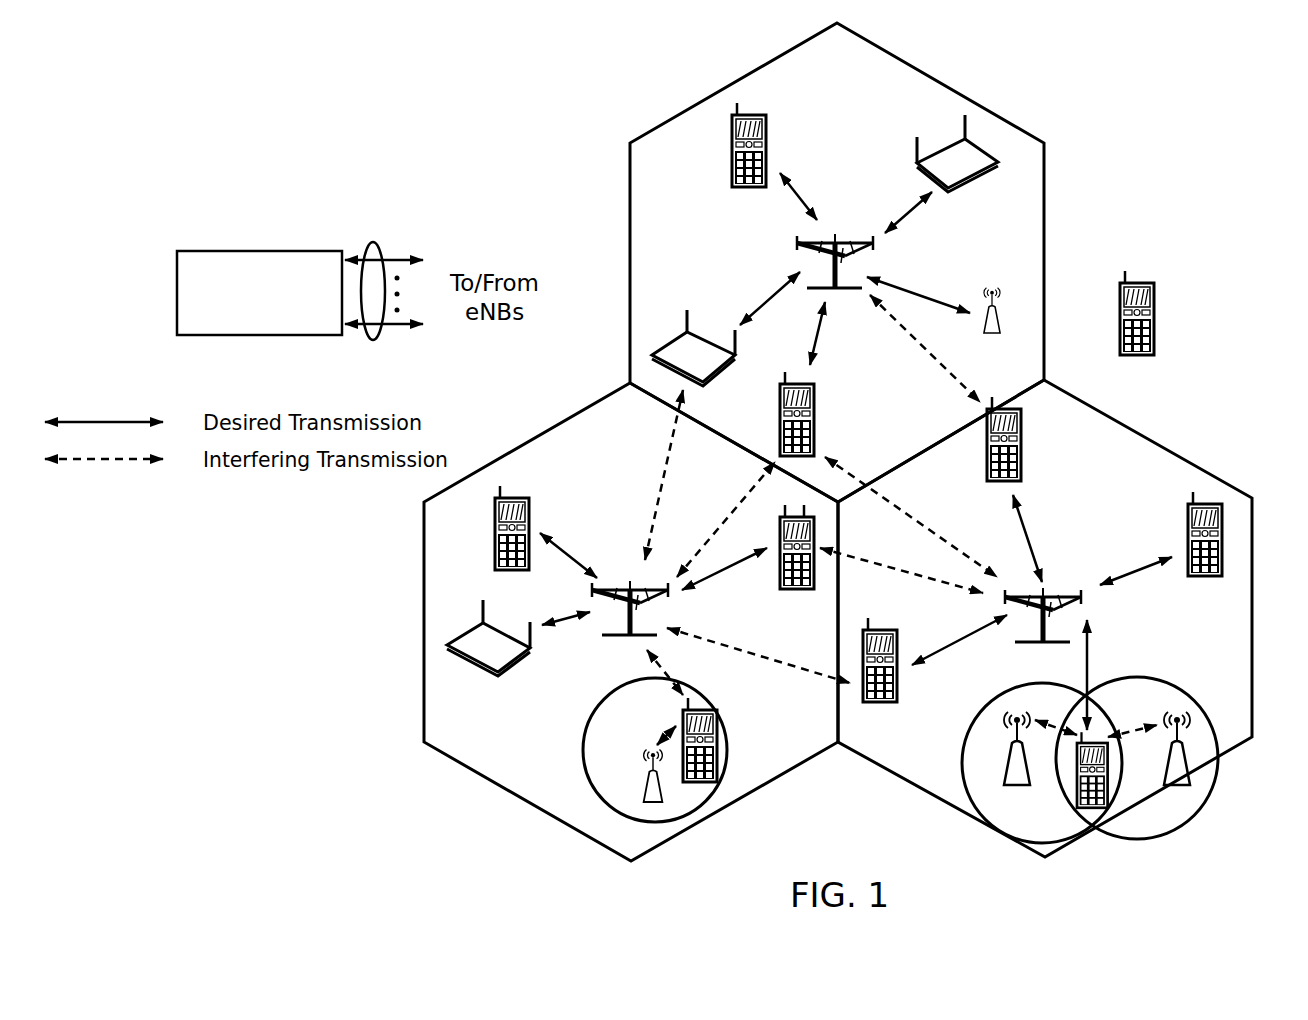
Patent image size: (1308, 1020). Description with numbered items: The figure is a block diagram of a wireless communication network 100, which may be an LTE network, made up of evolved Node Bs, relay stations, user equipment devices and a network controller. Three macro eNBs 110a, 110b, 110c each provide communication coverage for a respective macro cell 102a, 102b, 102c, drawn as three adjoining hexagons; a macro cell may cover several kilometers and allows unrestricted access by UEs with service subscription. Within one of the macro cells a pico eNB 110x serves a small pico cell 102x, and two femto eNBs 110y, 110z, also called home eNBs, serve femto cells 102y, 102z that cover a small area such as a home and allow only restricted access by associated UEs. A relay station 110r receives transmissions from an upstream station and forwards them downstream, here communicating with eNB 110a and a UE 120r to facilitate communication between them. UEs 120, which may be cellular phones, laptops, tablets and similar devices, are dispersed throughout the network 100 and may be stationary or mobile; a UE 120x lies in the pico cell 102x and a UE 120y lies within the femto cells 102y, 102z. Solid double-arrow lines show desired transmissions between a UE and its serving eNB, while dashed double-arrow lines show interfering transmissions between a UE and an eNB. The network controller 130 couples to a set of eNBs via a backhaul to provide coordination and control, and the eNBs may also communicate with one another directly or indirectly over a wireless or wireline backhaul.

The wireless communication network 100 is at (418, 117).
The macro cell 102a is at (887, 48).
The macro cell 102b is at (570, 417).
The macro cell 102c is at (1117, 417).
The pico cell 102x is at (597, 702).
The femto cell 102y is at (1017, 688).
The femto cell 102z is at (1138, 680).
The macro eNB 110a is at (851, 240).
The macro eNB 110b is at (622, 590).
The macro eNB 110c is at (1055, 595).
The relay station 110r is at (1002, 330).
The pico eNB 110x is at (667, 797).
The femto eNB 110y is at (1015, 787).
The femto eNB 110z is at (1188, 765).
The user equipment 120 is at (732, 123).
The UE 120r is at (1153, 293).
The UE 120x is at (717, 715).
The UE 120y is at (1095, 807).
The network controller 130 is at (260, 250).